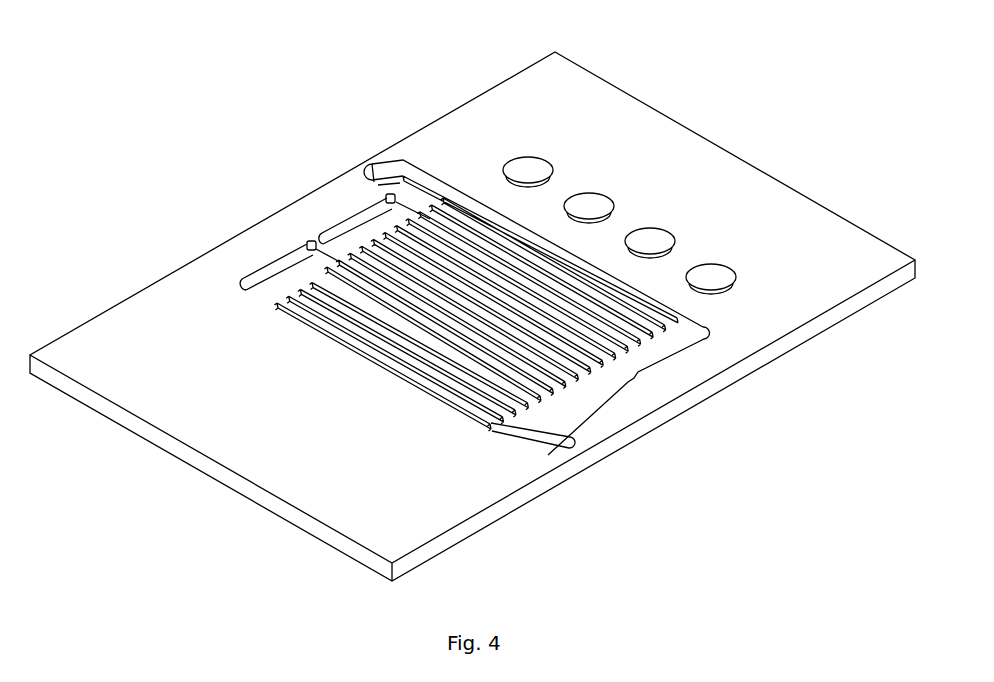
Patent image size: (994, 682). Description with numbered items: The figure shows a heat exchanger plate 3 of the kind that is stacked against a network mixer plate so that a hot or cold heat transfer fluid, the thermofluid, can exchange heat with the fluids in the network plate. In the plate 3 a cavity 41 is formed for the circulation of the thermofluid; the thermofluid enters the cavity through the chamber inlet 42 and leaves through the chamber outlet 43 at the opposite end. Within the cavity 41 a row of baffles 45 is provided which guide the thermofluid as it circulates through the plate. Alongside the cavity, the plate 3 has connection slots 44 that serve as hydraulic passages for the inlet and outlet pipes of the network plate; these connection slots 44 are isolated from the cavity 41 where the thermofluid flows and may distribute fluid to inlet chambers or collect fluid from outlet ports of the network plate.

The heat exchanger plate 3 is at (546, 76).
The cavity 41 is at (258, 293).
The chamber inlet 42 is at (402, 160).
The chamber outlet 43 is at (546, 459).
The connection slots 44 is at (670, 228).
The baffles 45 is at (678, 321).